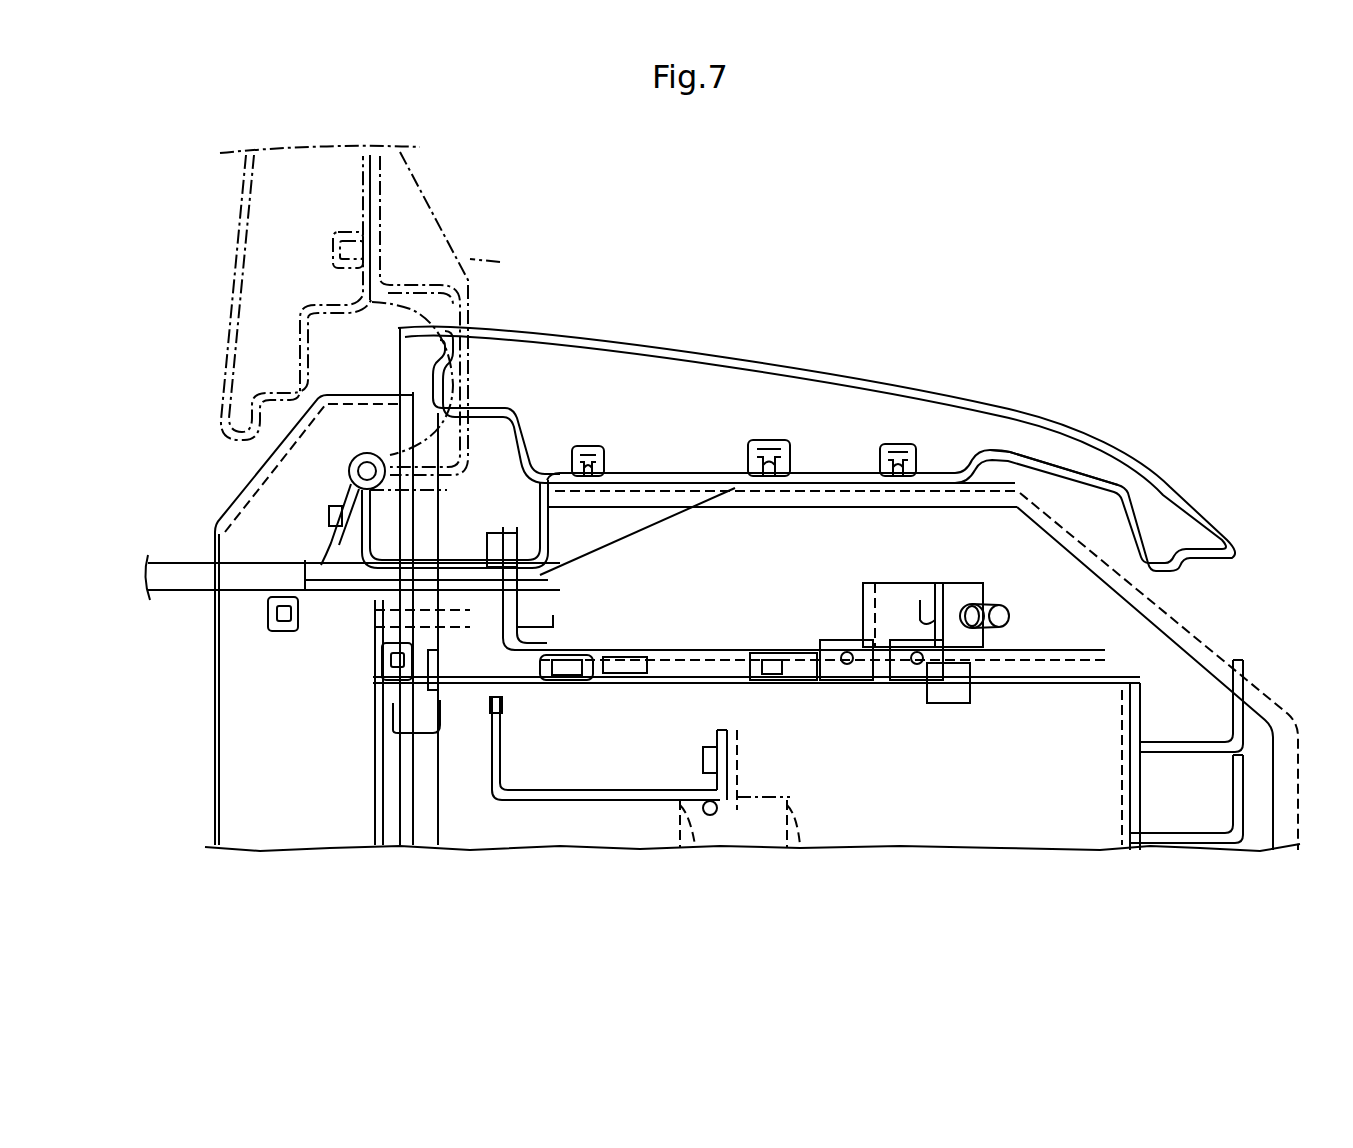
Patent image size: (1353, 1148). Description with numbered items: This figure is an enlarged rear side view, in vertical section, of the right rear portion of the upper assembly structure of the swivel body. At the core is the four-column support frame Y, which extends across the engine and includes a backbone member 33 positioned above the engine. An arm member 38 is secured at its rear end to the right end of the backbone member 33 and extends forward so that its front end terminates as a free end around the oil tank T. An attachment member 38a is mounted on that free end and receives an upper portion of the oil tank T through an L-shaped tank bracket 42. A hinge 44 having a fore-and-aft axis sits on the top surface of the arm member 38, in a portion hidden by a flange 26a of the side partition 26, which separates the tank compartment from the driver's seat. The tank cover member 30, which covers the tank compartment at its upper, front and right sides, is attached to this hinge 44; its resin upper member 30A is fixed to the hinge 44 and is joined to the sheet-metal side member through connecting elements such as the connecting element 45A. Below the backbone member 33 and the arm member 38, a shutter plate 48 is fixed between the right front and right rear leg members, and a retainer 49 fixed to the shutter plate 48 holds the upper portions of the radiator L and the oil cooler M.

The tank cover member 30 is at (507, 320).
The upper member 30A is at (668, 345).
The side partition 26 is at (220, 480).
The flange 26a is at (395, 393).
The hinge 44 is at (310, 491).
The backbone member 33 is at (180, 598).
The arm member 38 is at (393, 600).
The attachment member 38a is at (500, 543).
The L-shaped tank bracket 42 is at (540, 645).
The connecting element 45A is at (1027, 503).
The shutter plate 48 is at (497, 710).
The retainer 49 is at (527, 795).
The support frame Y is at (373, 600).
The radiator L is at (697, 850).
The oil cooler M is at (800, 850).
The oil tank T is at (1113, 770).